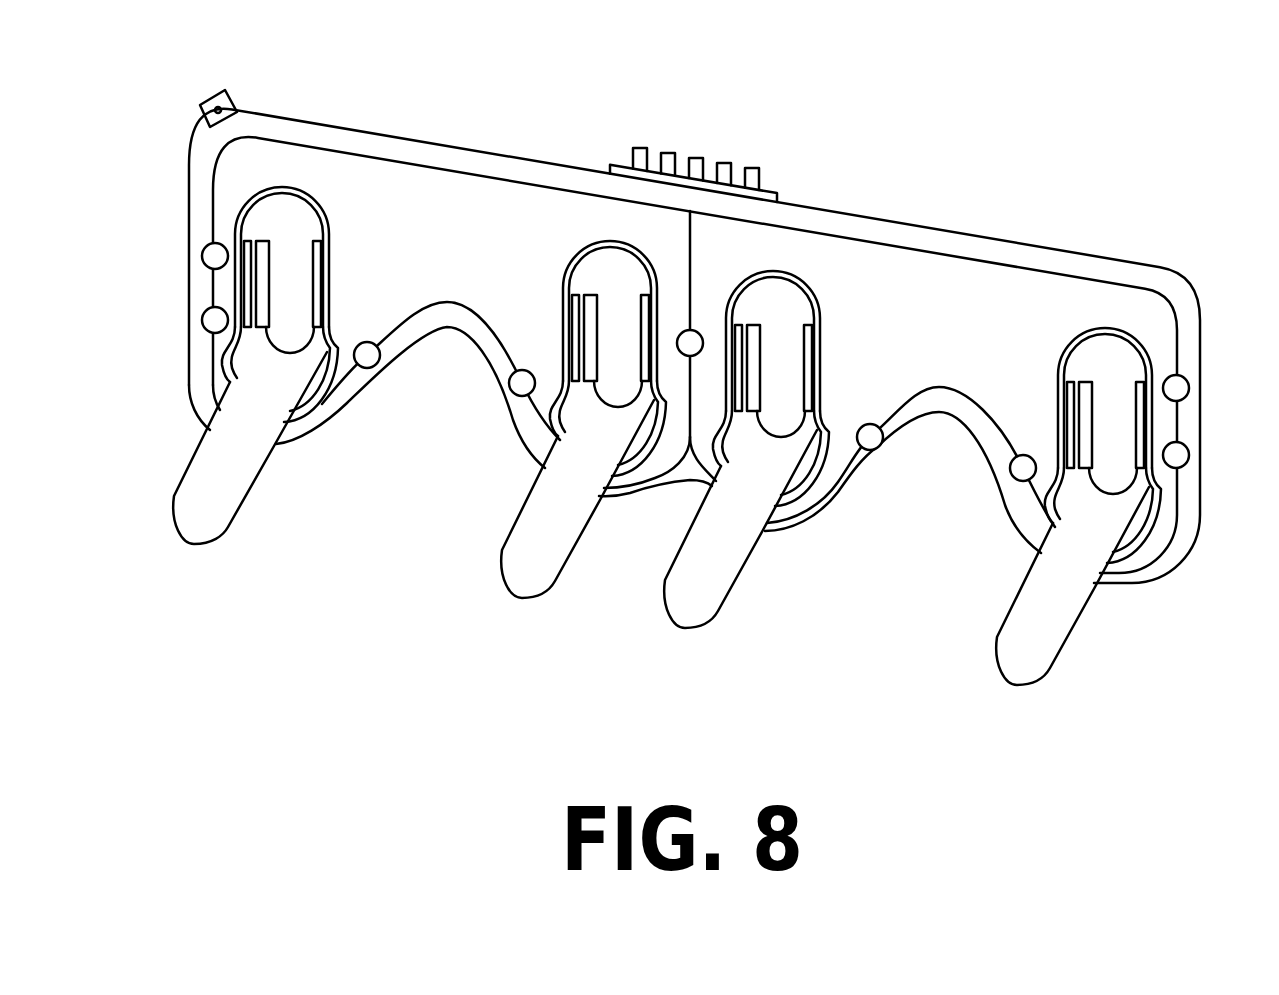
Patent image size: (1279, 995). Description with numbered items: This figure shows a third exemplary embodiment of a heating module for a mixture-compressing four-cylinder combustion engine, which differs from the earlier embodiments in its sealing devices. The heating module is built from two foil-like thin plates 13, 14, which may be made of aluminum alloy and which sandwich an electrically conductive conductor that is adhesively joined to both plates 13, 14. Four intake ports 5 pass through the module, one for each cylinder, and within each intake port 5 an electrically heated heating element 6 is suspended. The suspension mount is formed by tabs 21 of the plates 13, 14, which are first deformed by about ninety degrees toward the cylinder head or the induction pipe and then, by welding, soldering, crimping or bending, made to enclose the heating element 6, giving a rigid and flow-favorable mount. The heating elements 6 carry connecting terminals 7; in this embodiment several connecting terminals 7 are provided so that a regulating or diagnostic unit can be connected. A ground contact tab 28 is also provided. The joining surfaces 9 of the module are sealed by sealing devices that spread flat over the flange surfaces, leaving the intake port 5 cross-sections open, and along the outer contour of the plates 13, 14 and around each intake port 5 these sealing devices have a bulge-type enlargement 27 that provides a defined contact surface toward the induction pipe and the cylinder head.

The intake port 5 is at (282, 284).
The heating element 6 is at (227, 469).
The connecting terminal 7 is at (668, 153).
The joining surface 9 is at (962, 355).
The plate 13 is at (702, 358).
The plate 14 is at (1052, 342).
The tab 21 is at (1136, 506).
The bulge-type enlargement 27 is at (300, 186).
The ground contact tab 28 is at (225, 90).